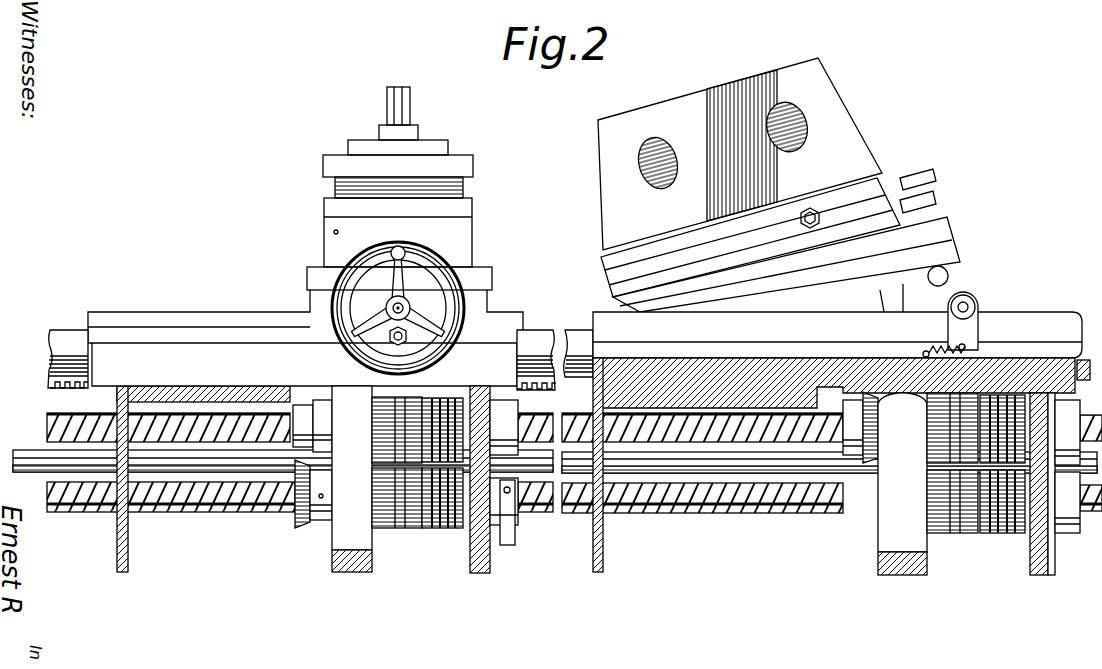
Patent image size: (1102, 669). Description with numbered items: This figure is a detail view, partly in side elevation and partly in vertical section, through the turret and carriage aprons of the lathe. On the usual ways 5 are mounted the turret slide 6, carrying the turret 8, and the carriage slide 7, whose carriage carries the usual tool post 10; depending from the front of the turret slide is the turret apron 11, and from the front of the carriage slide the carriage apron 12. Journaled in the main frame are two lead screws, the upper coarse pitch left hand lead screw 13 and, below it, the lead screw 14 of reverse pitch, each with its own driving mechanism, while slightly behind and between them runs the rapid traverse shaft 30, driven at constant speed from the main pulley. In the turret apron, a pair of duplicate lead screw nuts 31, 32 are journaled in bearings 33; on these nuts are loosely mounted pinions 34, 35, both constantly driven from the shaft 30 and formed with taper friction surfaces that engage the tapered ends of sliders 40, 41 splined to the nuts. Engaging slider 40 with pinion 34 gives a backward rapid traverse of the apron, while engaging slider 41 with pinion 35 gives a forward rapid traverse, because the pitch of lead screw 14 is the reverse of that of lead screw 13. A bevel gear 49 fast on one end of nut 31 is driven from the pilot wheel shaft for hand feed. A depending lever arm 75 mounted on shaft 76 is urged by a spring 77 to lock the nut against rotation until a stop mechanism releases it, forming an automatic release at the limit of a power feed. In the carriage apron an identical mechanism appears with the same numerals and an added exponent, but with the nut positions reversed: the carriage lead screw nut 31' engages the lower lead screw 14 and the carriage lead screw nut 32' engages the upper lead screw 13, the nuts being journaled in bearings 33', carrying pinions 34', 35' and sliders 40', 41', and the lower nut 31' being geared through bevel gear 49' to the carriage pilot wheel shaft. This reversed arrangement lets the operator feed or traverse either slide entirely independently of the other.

The ways 5 is at (578, 337).
The turret slide 6 is at (745, 313).
The carriage slide 7 is at (478, 309).
The turret 8 is at (860, 139).
The tool post 10 is at (440, 163).
The turret apron 11 is at (778, 360).
The carriage apron 12 is at (246, 393).
The lead screw 13 is at (187, 415).
The lead screw 14 is at (192, 512).
The rapid traverse shaft 30 is at (22, 452).
The lead screw nut 31 is at (1087, 380).
The carriage lead screw nut 31' is at (292, 507).
The lead screw nut 32 is at (1073, 485).
The carriage lead screw nut 32' is at (312, 402).
The bearings 33 is at (971, 498).
The bearings 33' is at (431, 494).
The pinion 34 is at (935, 428).
The pinion 34' is at (378, 412).
The pinion 35 is at (952, 517).
The pinion 35' is at (397, 516).
The slider 40 is at (1007, 391).
The slider 40' is at (451, 410).
The slider 41 is at (1002, 516).
The slider 41' is at (445, 516).
The bevel gear 49 is at (855, 389).
The bevel gear 49' is at (301, 513).
The lever arm 75 is at (980, 312).
The shaft 76 is at (970, 298).
The spring 77 is at (940, 348).